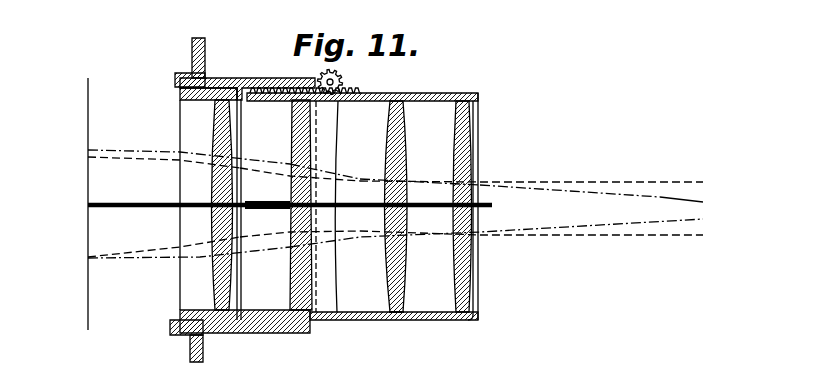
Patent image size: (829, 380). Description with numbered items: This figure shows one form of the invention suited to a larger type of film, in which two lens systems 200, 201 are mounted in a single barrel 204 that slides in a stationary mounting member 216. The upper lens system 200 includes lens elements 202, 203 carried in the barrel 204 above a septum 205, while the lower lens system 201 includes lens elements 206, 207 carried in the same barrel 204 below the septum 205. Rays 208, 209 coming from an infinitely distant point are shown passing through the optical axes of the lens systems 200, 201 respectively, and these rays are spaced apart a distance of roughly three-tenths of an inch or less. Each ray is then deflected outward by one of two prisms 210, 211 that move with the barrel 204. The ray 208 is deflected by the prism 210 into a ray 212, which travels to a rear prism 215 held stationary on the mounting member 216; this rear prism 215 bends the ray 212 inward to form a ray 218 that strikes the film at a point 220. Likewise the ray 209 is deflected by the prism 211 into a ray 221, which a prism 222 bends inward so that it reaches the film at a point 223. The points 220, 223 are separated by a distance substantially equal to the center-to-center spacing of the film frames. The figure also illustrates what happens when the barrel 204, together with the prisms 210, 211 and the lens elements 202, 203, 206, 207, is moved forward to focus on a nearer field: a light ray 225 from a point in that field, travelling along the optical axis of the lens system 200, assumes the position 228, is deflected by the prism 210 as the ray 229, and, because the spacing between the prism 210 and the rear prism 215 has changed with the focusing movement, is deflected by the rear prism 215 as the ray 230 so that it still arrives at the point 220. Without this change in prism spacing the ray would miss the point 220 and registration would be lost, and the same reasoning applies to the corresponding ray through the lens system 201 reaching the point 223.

The lens system 200 is at (416, 185).
The lens system 201 is at (485, 278).
The lens element 202 is at (481, 157).
The lens element 203 is at (400, 128).
The barrel 204 is at (385, 95).
The septum 205 is at (373, 207).
The lens element 206 is at (467, 293).
The lens element 207 is at (400, 293).
The ray 208 is at (612, 182).
The ray 209 is at (605, 237).
The prism 210 is at (293, 127).
The prism 211 is at (475, 255).
The ray 212 is at (252, 171).
The rear prism 215 is at (221, 110).
The mounting member 216 is at (232, 84).
The ray 218 is at (165, 158).
The point 220 is at (88, 150).
The ray 221 is at (255, 236).
The prism 222 is at (215, 225).
The point 223 is at (88, 258).
The light ray 225 is at (660, 197).
The light ray 228 is at (353, 173).
The light ray 229 is at (283, 167).
The light ray 230 is at (168, 148).